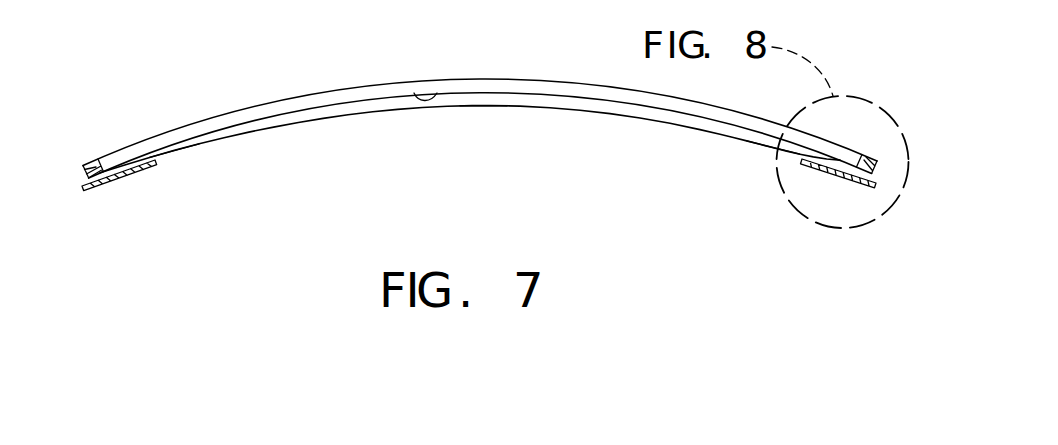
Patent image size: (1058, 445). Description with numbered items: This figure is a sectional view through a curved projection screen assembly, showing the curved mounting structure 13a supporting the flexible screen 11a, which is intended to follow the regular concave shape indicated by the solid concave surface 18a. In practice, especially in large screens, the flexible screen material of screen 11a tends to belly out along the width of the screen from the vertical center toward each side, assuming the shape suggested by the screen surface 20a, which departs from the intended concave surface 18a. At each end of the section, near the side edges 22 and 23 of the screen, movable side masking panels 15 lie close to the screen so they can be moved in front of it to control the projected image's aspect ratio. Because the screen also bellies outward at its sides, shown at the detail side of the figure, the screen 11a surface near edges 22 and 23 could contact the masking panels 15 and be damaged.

The mounting structure 13a is at (140, 148).
The screen 11a is at (557, 110).
The concave surface 18a is at (414, 93).
The screen surface 20a is at (477, 107).
The edge 22 is at (188, 148).
The edge 23 is at (757, 145).
The movable side masking panel 15 is at (125, 173).